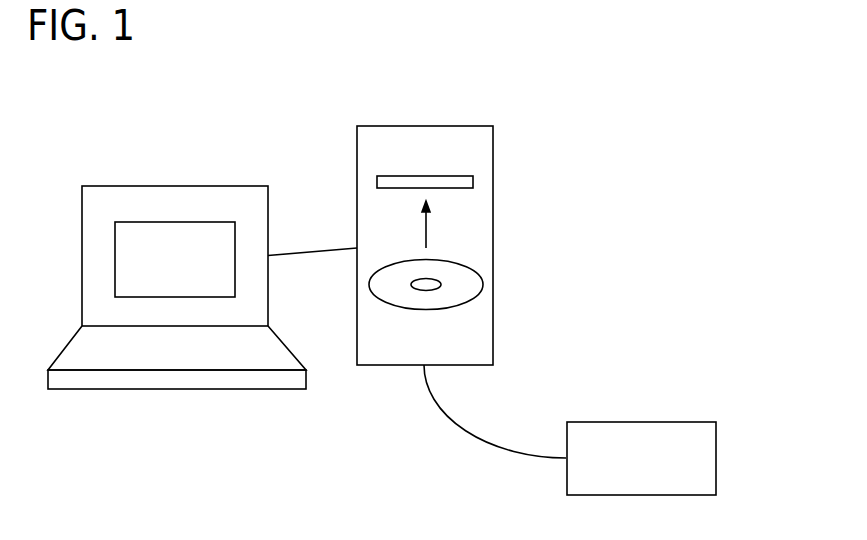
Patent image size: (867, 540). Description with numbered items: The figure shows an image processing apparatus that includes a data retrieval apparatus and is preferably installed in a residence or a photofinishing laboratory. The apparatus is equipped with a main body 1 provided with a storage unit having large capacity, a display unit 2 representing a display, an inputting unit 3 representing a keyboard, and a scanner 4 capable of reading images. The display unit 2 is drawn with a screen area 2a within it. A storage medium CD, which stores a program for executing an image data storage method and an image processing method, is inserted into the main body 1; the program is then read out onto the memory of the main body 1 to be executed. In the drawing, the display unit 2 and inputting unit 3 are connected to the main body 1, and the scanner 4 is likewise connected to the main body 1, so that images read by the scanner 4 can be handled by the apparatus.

The main body 1 is at (478, 211).
The display unit 2 is at (224, 197).
The display screen 2a is at (158, 221).
The inputting unit 3 is at (181, 380).
The scanner 4 is at (633, 432).
The storage medium CD is at (483, 284).